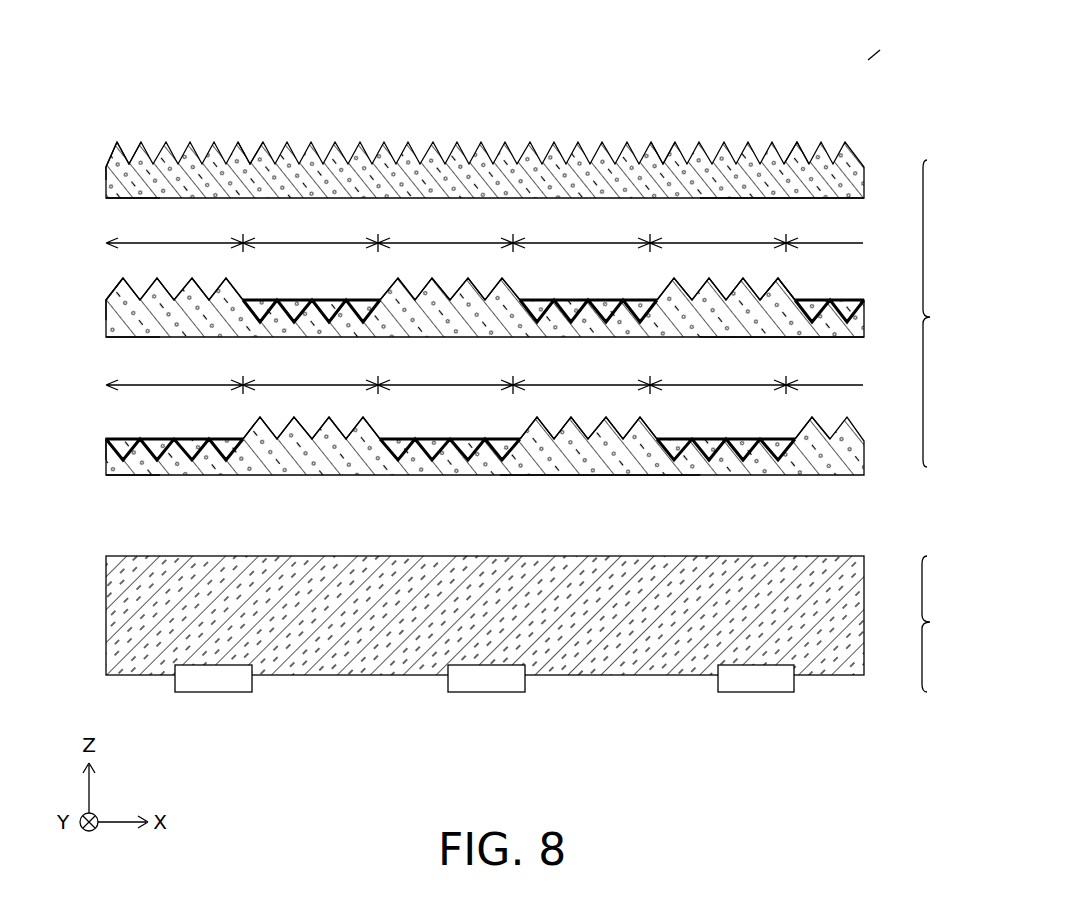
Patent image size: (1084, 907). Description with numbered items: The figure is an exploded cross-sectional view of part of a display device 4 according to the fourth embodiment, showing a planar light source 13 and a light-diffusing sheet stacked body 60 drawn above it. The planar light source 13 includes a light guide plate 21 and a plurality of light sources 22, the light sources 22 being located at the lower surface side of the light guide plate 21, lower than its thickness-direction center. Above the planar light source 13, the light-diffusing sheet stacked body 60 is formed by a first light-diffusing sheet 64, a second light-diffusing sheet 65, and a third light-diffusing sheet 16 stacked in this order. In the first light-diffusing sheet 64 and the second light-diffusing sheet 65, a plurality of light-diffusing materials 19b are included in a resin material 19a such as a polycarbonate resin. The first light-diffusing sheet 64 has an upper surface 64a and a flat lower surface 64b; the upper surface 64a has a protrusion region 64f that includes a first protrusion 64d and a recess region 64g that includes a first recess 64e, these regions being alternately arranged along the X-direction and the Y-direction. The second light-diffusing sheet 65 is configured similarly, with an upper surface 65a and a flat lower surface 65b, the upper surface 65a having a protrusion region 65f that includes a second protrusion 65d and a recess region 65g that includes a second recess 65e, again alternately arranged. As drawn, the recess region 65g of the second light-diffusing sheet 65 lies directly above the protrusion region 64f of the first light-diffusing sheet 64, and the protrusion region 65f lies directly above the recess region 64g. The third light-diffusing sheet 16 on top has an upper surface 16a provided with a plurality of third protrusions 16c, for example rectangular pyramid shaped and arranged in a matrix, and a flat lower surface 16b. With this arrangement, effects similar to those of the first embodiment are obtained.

The display device 4 is at (873, 49).
The planar light source 13 is at (941, 624).
The third light-diffusing sheet 16 is at (850, 180).
The upper surface 16a is at (797, 141).
The lower surface 16b is at (810, 198).
The third protrusion 16c is at (129, 163).
The resin material 19a is at (106, 176).
The light-diffusing material 19b is at (138, 192).
The light guide plate 21 is at (365, 640).
The light source 22 is at (212, 680).
The light-diffusing sheet stacked body 60 is at (942, 313).
The first light-diffusing sheet 64 is at (855, 450).
The upper surface 64a is at (818, 418).
The lower surface 64b is at (605, 475).
The first protrusion 64d is at (262, 427).
The first recess 64e is at (128, 446).
The protrusion region 64f is at (446, 374).
The recess region 64g is at (484, 378).
The second light-diffusing sheet 65 is at (857, 312).
The upper surface 65a is at (780, 278).
The lower surface 65b is at (812, 337).
The second protrusion 65d is at (162, 290).
The second recess 65e is at (296, 306).
The protrusion region 65f is at (484, 236).
The recess region 65g is at (446, 232).